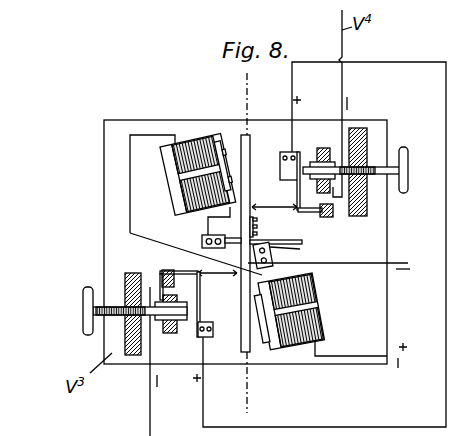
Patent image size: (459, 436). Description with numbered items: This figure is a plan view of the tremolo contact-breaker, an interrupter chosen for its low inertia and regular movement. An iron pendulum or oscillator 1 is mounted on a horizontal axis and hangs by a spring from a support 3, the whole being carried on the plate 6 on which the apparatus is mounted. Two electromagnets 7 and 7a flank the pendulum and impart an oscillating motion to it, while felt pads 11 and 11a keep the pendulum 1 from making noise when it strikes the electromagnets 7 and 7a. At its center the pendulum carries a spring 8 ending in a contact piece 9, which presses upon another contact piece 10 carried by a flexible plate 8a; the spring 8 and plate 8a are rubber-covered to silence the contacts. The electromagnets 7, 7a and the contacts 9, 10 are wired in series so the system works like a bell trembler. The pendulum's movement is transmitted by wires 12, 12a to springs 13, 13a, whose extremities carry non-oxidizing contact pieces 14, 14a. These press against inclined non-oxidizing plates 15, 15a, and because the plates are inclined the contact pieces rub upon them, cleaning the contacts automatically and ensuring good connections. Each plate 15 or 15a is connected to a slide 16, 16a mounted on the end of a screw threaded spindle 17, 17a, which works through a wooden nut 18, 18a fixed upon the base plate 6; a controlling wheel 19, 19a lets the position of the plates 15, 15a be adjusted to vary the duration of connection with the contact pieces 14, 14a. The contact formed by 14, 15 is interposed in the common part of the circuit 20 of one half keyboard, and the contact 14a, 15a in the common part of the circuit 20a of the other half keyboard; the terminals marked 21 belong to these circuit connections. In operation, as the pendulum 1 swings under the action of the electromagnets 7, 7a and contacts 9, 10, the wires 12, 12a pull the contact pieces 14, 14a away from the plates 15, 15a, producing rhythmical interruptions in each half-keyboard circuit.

The pendulum 1 is at (240, 337).
The support 3 is at (202, 236).
The plate 6 is at (380, 316).
The electromagnet 7 is at (308, 323).
The electromagnet 7a is at (190, 138).
The spring 8 is at (271, 240).
The flexible plate 8a is at (271, 247).
The contact piece 9 is at (331, 240).
The contact piece 10 is at (300, 249).
The felt pad 11 is at (262, 340).
The felt pad 11a is at (230, 140).
The wire 12 is at (217, 285).
The wire 12a is at (293, 207).
The spring 13 is at (200, 311).
The spring 13a is at (297, 178).
The contact piece 14 is at (181, 271).
The contact piece 14a is at (301, 212).
The plate 15 is at (163, 271).
The plate 15a is at (333, 211).
The slide 16 is at (170, 333).
The slide 16a is at (322, 148).
The screw threaded spindle 17 is at (118, 316).
The screw threaded spindle 17a is at (382, 166).
The wooden nut 18 is at (131, 356).
The wooden nut 18a is at (357, 128).
The controlling wheel 19 is at (83, 322).
The controlling wheel 19a is at (408, 160).
The circuit 20 is at (157, 387).
The circuit 20a is at (339, 103).
The terminal 21 is at (396, 263).